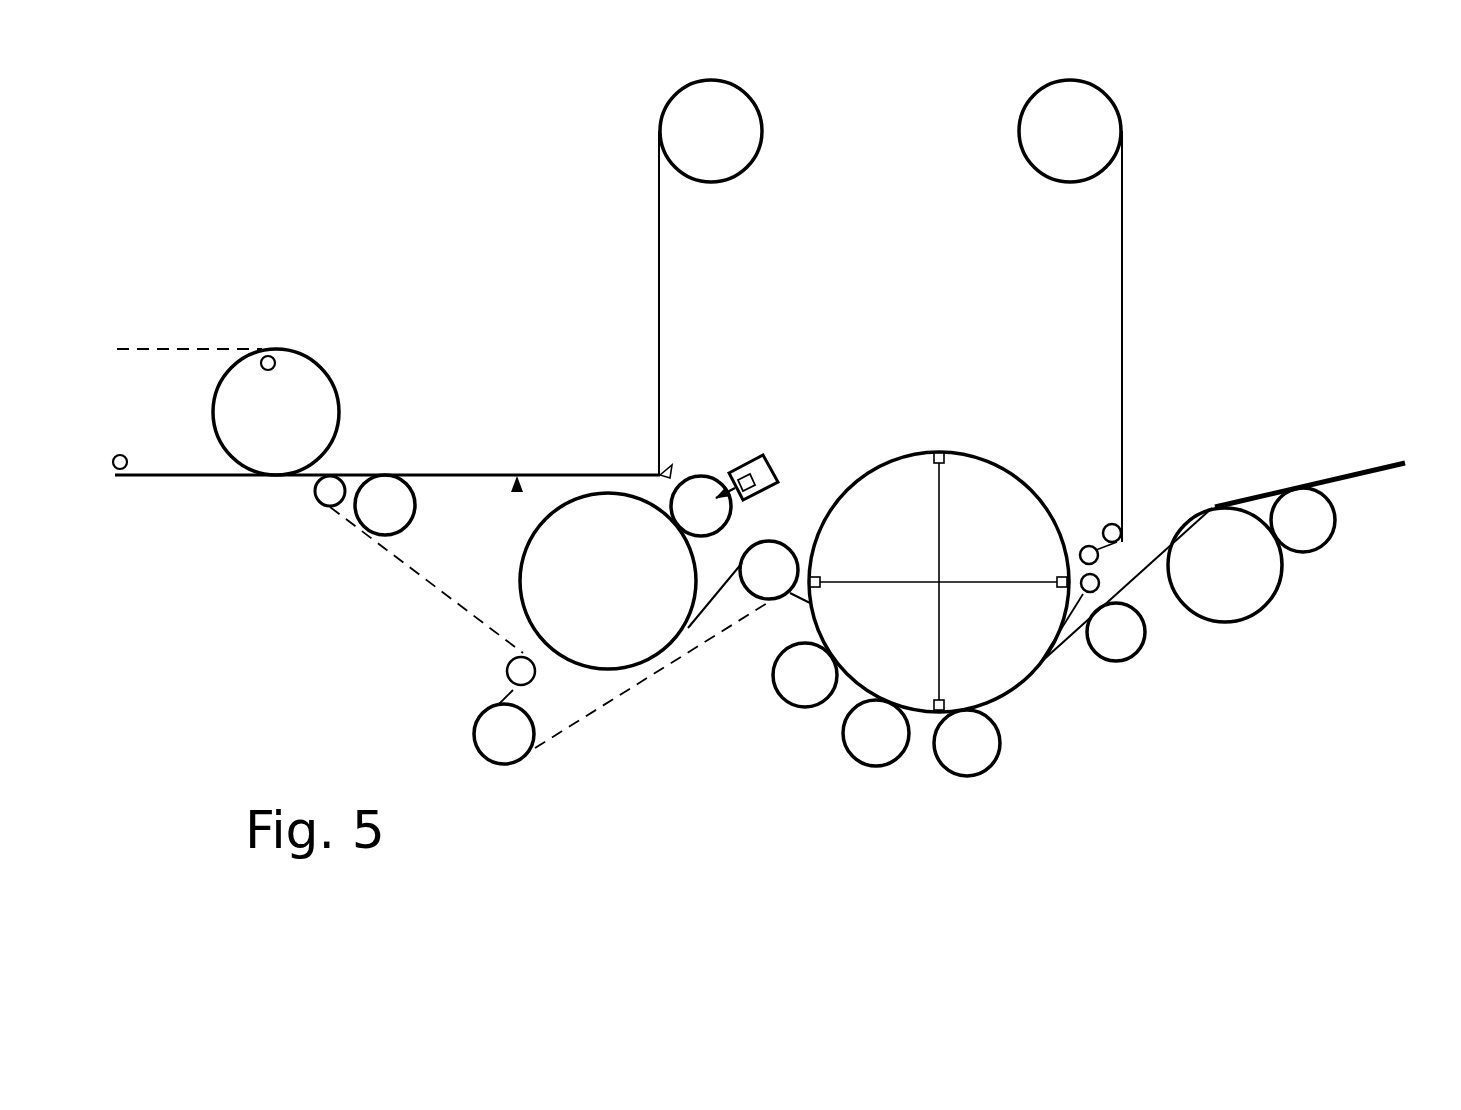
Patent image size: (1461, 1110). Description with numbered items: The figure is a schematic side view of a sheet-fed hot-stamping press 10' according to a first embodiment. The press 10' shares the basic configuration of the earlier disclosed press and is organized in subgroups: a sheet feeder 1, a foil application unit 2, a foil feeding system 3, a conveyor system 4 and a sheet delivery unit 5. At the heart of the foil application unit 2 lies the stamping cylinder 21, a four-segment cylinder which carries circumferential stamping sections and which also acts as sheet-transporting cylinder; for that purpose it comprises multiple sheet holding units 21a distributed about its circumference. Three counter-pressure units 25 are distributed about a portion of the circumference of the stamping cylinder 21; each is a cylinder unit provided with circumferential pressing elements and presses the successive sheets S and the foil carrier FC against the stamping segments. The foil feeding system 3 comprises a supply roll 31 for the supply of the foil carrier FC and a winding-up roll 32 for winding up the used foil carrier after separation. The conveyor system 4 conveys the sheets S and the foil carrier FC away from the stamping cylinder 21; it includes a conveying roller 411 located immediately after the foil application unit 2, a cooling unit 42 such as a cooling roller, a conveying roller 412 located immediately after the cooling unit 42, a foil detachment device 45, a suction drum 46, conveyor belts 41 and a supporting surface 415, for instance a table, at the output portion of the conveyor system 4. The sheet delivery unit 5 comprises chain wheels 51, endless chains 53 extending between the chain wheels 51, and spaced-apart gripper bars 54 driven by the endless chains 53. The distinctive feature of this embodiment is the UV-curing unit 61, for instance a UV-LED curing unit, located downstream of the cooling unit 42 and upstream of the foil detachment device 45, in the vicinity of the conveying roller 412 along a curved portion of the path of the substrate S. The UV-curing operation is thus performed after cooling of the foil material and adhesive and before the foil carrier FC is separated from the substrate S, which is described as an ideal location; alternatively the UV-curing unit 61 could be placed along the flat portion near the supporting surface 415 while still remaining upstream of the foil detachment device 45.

The hot-stamping press 10' is at (782, 447).
The sheet feeder 1 is at (1452, 392).
The foil application unit 2 is at (962, 418).
The foil feeding system 3 is at (1160, 253).
The conveyor system 4 is at (446, 620).
The sheet delivery unit 5 is at (198, 288).
The stamping cylinder 21 is at (1003, 480).
The sheet holding units 21a is at (938, 452).
The counter-pressure units 25 is at (782, 650).
The supply roll 31 is at (1112, 110).
The winding-up roll 32 is at (670, 112).
The conveyor belts/bands 41 is at (600, 712).
The cooling unit 42 is at (602, 495).
The foil detachment device 45 is at (683, 468).
The suction drum 46 is at (400, 505).
The chain wheels 51 is at (330, 395).
The endless chains 53 is at (133, 348).
The gripper bars 54 is at (127, 460).
The UV-curing unit 61 is at (778, 466).
The conveying roller/cylinder 411 is at (770, 548).
The conveying roller/cylinder 412 is at (698, 518).
The supporting surface 415 is at (505, 497).
The foil carrier FC is at (1123, 318).
The sheets S is at (1325, 477).